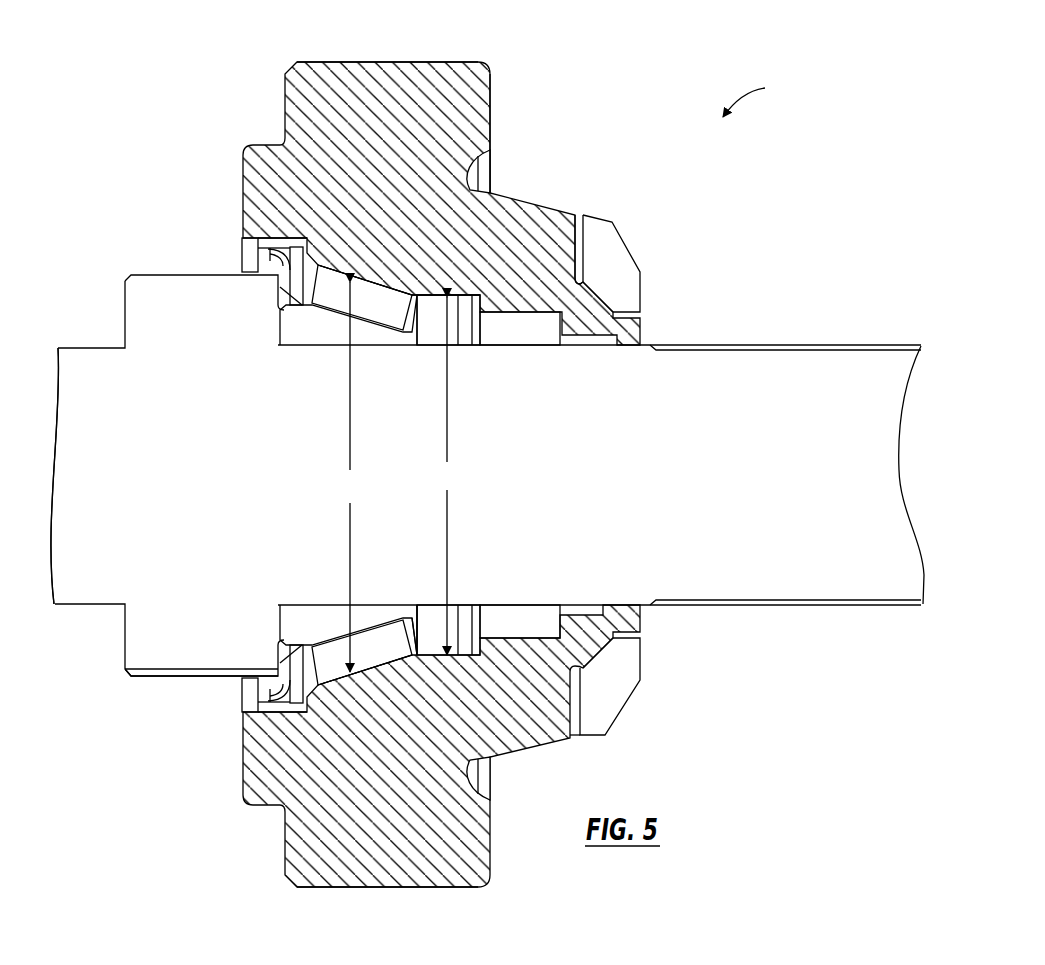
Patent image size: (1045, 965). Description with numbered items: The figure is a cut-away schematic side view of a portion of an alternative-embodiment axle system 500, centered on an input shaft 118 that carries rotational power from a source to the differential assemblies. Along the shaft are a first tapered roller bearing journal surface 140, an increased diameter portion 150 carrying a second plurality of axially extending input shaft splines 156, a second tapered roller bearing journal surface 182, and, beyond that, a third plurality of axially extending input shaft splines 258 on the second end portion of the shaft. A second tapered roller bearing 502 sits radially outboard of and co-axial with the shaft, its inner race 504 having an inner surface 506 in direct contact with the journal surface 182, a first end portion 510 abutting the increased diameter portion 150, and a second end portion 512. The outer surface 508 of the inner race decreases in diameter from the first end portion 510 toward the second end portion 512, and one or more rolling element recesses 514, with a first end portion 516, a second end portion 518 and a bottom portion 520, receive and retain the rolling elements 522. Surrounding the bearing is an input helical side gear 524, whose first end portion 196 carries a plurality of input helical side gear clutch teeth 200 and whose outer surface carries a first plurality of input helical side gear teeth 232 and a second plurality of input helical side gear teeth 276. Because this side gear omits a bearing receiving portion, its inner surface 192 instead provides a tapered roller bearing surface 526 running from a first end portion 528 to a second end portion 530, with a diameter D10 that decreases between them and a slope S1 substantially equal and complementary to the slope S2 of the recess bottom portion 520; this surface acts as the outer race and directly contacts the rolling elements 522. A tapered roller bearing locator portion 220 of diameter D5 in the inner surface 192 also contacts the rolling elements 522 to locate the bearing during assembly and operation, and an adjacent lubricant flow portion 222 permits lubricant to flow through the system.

The axle system 500 is at (761, 95).
The first plurality of input helical side gear teeth 232 is at (433, 62).
The input helical side gear 524 is at (414, 133).
The plurality of input helical side gear clutch teeth 200 is at (243, 153).
The tapered roller bearing locator portion 220 is at (470, 292).
The lubricant flow portion 222 is at (537, 313).
The second plurality of input helical side gear teeth 276 is at (618, 255).
The third plurality of axially extending input shaft splines 258 is at (802, 345).
The outer surface 508 is at (278, 284).
The slope S2 is at (285, 308).
The slope S1 is at (373, 280).
The inner race 504 is at (318, 334).
The inner surface 506 is at (278, 348).
The first end portion 510 is at (296, 355).
The second tapered roller bearing journal surface 182 is at (336, 350).
The second end portion 512 is at (395, 345).
The rolling elements 522 is at (372, 318).
The input shaft 118 is at (168, 460).
The first tapered roller bearing journal surface 140 is at (84, 604).
The increased diameter portion 150 is at (160, 669).
The second plurality of axially extending input shaft splines 156 is at (142, 677).
The inner surface 192 is at (630, 603).
The first end portion 196 is at (288, 887).
The second tapered roller bearing 502 is at (290, 635).
The first end portion 516 is at (283, 608).
The bottom portion 520 is at (331, 612).
The rolling element recesses 514 is at (363, 610).
The second end portion 518 is at (395, 615).
The second end portion 530 is at (393, 668).
The tapered roller bearing surface 526 is at (358, 680).
The first end portion 528 is at (340, 692).
The diameter D10 is at (351, 477).
The diameter D5 is at (447, 476).